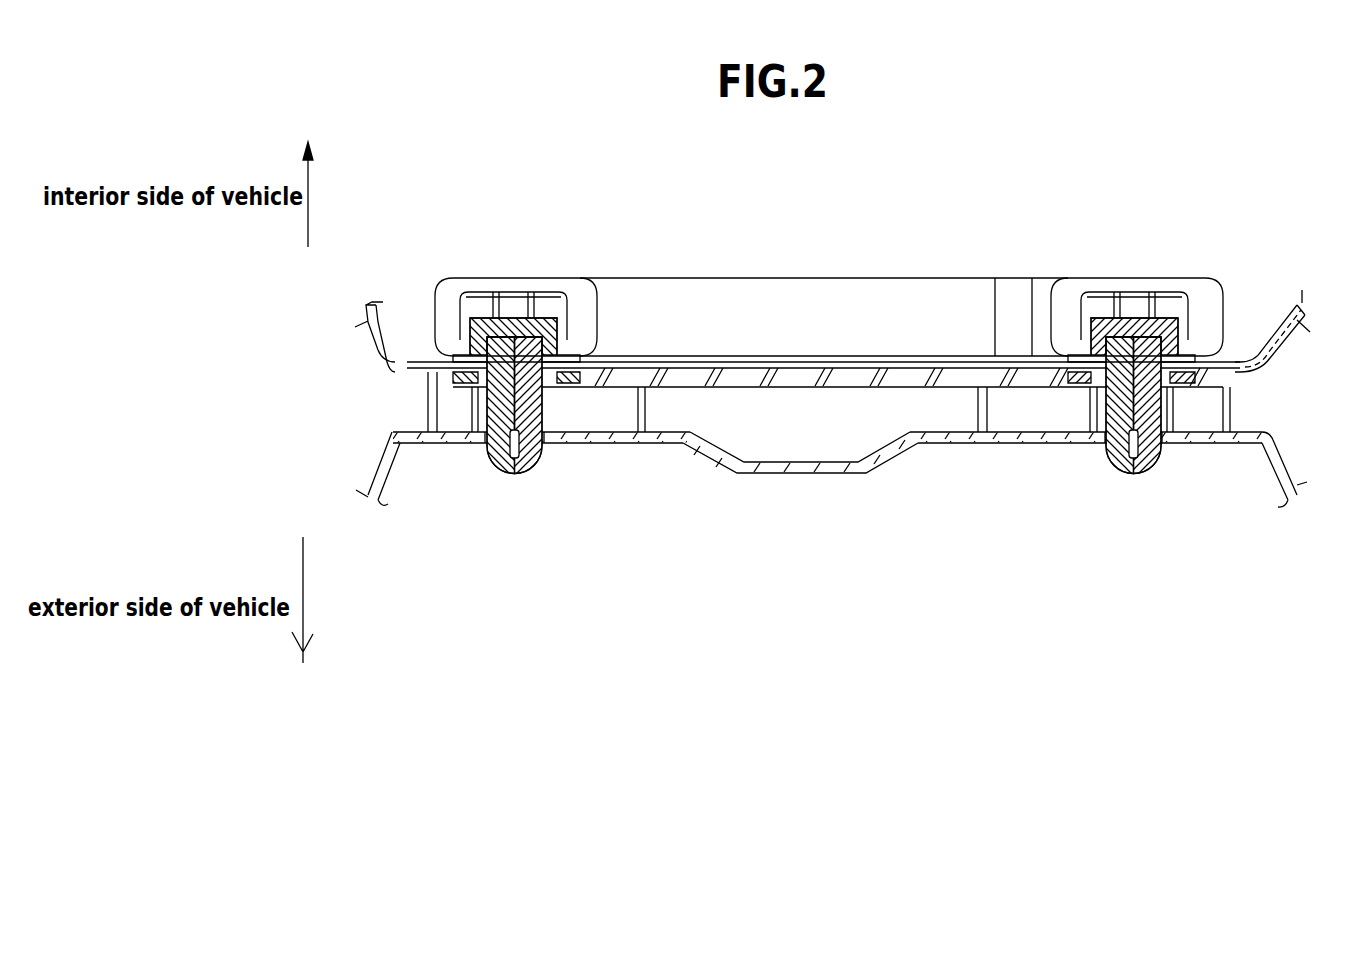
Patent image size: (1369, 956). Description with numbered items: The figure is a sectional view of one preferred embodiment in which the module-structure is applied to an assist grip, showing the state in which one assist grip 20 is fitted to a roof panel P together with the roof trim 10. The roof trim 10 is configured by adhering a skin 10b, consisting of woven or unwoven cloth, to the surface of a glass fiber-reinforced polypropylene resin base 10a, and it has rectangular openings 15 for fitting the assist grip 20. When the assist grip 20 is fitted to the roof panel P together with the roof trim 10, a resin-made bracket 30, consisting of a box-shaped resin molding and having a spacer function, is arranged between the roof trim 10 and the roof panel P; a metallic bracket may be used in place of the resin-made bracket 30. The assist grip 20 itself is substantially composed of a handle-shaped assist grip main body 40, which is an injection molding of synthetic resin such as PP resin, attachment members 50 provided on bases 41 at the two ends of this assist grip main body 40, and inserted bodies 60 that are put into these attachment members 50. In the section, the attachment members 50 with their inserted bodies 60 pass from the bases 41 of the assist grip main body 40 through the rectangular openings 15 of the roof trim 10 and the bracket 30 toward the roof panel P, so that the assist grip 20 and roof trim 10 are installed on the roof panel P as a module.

The roof trim 10 is at (702, 362).
The resin base 10a is at (1278, 328).
The skin 10b is at (1283, 302).
The rectangular opening 15 is at (551, 433).
The assist grip 20 is at (970, 255).
The resin-made bracket 30 is at (807, 388).
The assist grip main body 40 is at (798, 295).
The base 41 is at (521, 292).
The attachment member 50 is at (466, 325).
The inserted body 60 is at (543, 318).
The roof panel P is at (952, 443).